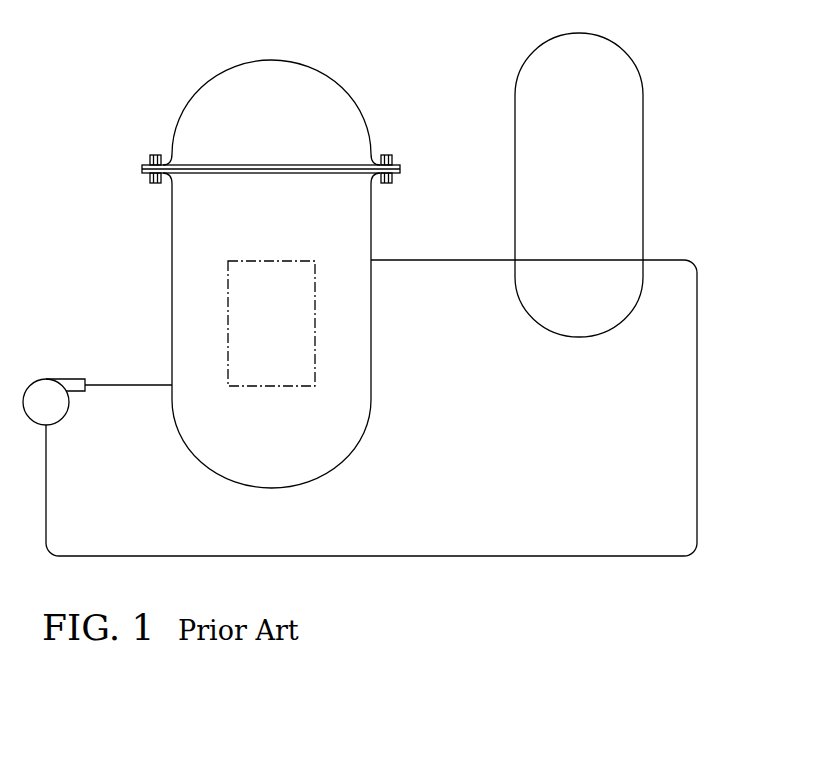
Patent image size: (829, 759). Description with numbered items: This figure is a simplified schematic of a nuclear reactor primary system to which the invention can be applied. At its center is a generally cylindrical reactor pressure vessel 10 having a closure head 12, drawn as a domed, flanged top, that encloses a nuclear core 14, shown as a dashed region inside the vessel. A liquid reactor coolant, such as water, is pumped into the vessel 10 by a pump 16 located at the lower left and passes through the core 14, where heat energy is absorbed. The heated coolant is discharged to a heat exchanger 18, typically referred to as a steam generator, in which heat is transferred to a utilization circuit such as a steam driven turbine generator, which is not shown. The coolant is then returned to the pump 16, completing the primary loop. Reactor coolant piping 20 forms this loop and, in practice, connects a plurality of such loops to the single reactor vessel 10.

The reactor pressure vessel 10 is at (279, 331).
The closure head 12 is at (183, 117).
The nuclear core 14 is at (209, 323).
The pump 16 is at (45, 380).
The heat exchanger 18 is at (643, 129).
The reactor coolant piping 20 is at (697, 491).